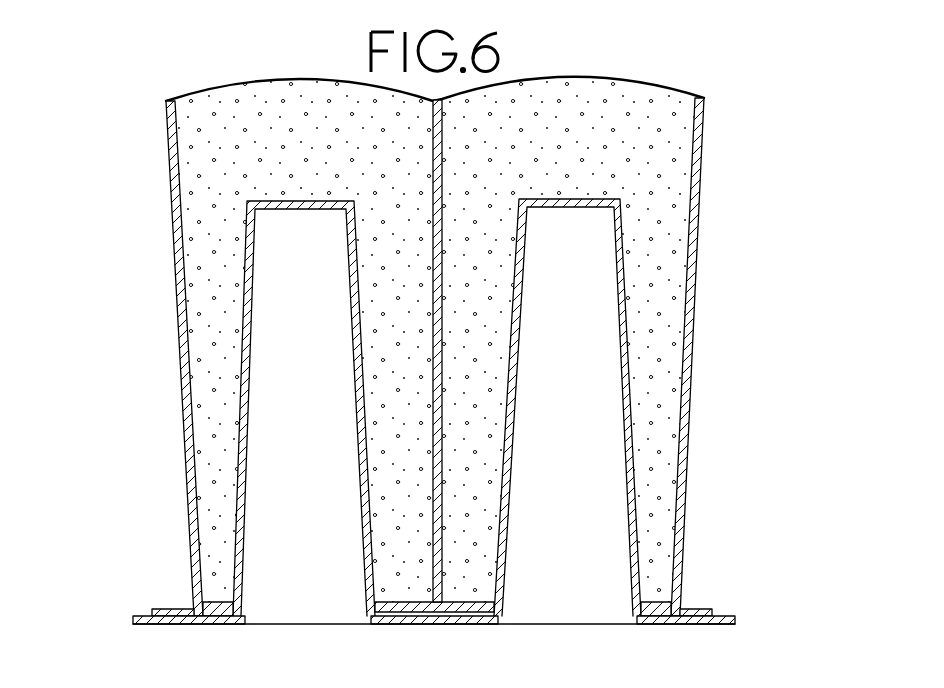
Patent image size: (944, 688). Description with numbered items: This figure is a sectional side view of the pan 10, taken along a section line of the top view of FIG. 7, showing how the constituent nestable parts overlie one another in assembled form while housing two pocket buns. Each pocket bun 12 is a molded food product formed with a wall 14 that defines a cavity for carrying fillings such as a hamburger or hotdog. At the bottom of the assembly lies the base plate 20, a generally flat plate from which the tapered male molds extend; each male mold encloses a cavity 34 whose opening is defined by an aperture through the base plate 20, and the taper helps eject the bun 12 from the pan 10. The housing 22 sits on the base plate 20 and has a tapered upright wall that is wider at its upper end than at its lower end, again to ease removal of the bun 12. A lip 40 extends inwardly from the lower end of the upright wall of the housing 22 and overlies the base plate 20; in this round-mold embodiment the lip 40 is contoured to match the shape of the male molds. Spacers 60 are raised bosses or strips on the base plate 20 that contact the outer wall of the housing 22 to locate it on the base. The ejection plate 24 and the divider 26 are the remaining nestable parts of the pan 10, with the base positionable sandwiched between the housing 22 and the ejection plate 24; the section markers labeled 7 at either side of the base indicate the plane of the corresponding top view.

The pan 10 is at (773, 209).
The pocket bun 12 is at (237, 72).
The wall 14 is at (190, 203).
The base plate 20 is at (150, 627).
The housing 22 is at (182, 415).
The ejection plate 24 is at (228, 598).
The divider 26 is at (433, 468).
The cavity 34 is at (311, 373).
The lip 40 is at (228, 612).
The spacers 60 is at (169, 608).
The section line 7- 7 is at (188, 598).